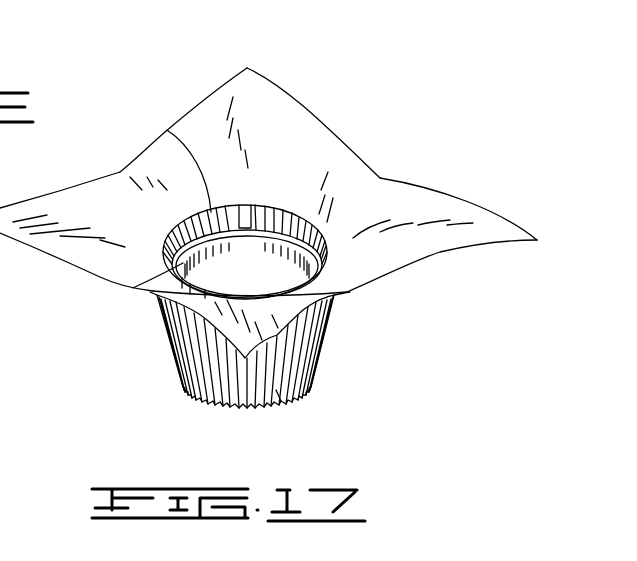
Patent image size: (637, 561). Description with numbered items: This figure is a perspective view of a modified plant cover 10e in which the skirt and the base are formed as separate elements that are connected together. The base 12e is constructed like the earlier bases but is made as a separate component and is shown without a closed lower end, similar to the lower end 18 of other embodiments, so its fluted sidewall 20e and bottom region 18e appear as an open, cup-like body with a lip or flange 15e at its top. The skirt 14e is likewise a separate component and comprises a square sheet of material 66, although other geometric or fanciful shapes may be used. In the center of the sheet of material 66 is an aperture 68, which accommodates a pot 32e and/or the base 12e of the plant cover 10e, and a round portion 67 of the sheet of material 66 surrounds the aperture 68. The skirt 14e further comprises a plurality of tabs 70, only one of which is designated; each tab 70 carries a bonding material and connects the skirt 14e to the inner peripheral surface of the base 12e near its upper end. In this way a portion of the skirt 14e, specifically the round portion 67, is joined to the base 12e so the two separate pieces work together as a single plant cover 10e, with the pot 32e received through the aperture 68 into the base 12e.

The lower end 18 is at (247, 48).
The modified plant cover 10e is at (297, 73).
The skirt 14e is at (329, 130).
The sheet of material 66 is at (141, 157).
The aperture 68 is at (167, 130).
The round portion 67 is at (133, 288).
The base 12e is at (332, 315).
The fluted sidewall 20e is at (200, 343).
The cup bottom 18e is at (200, 397).
The flange 15e is at (279, 388).
The pot 32e is at (287, 228).
The tab 70 is at (247, 210).